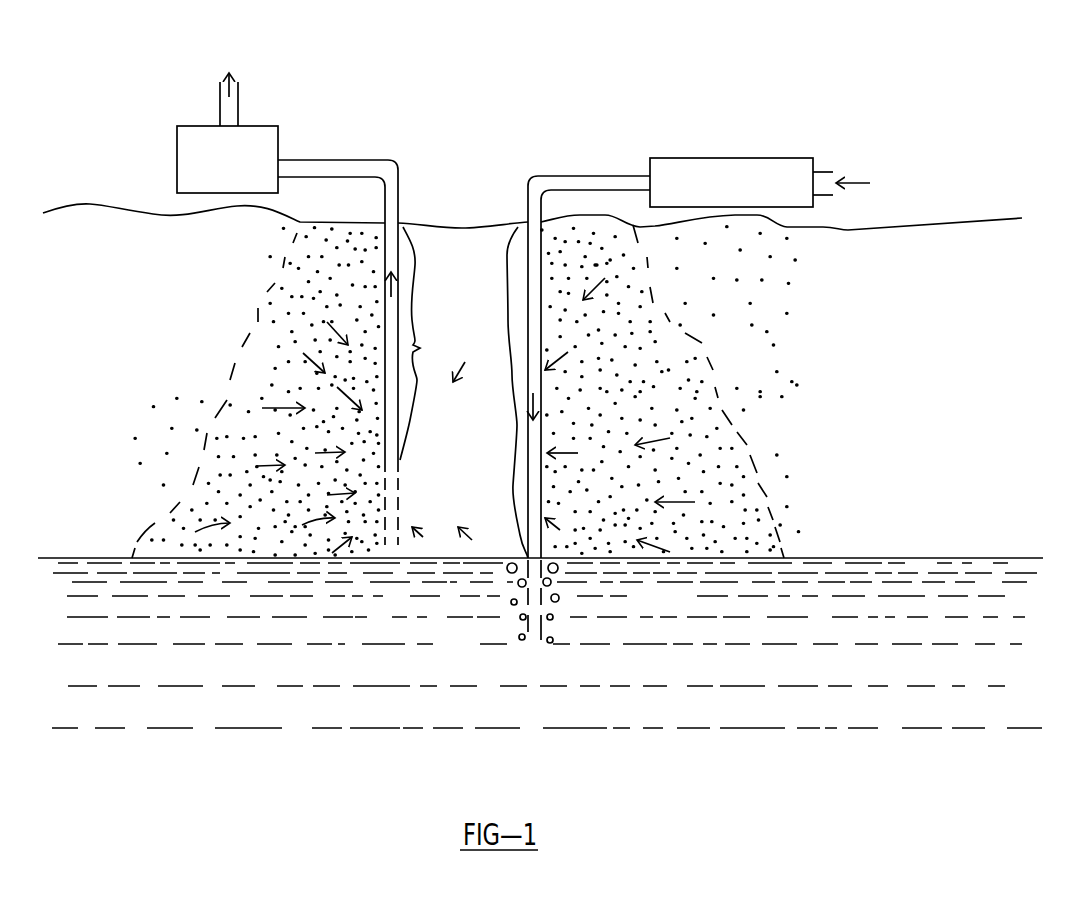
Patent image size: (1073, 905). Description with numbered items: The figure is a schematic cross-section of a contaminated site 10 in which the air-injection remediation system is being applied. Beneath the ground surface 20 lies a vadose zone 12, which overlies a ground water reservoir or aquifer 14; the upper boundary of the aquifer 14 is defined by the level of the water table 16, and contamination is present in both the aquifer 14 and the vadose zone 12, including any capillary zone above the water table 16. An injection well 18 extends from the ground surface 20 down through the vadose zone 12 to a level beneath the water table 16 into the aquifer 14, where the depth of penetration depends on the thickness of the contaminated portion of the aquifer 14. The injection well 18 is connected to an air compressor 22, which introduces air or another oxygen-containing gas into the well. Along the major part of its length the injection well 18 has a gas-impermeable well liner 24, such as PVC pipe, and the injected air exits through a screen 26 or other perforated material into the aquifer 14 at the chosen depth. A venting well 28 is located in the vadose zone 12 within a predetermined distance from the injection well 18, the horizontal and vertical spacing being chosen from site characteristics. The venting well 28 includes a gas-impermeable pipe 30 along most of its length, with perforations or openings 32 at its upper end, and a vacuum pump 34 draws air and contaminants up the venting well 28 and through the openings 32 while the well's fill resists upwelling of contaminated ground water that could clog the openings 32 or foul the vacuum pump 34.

The contaminated site 10 is at (755, 433).
The vadose zone 12 is at (757, 363).
The ground water reservoir or aquifer 14 is at (884, 679).
The water table 16 is at (937, 558).
The injection well 18 is at (523, 212).
The ground surface 20 is at (940, 213).
The air compressor 22 is at (745, 153).
The gas-impermeable well liner 24 is at (453, 437).
The screen 26 is at (552, 631).
The venting well 28 is at (405, 203).
The gas-impermeable pipe 30 is at (460, 283).
The perforations or openings 32 is at (405, 488).
The vacuum pump 34 is at (270, 118).